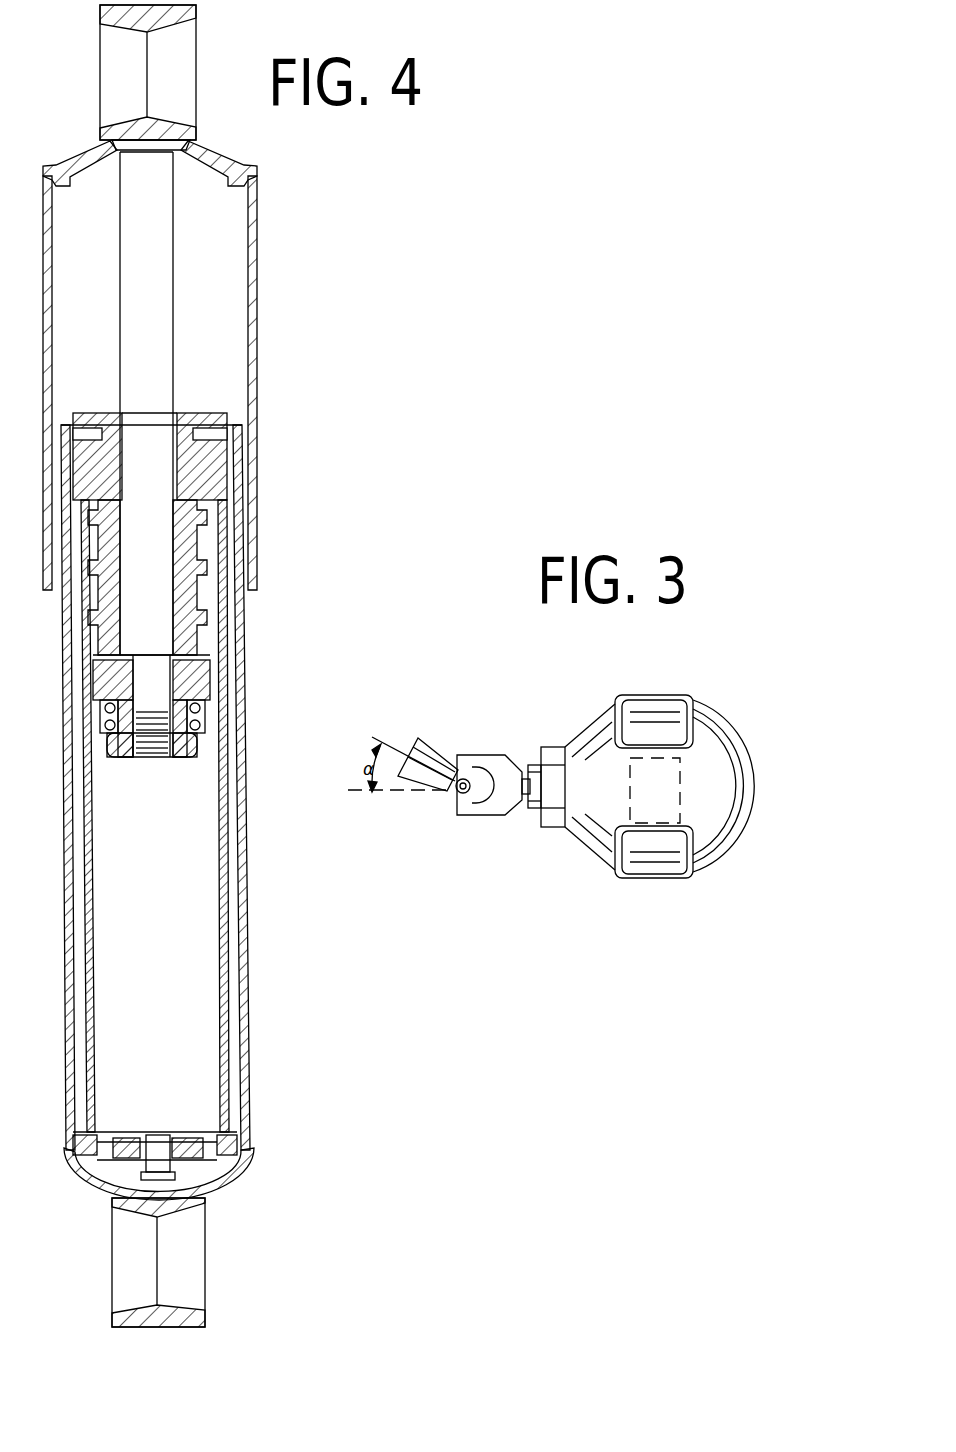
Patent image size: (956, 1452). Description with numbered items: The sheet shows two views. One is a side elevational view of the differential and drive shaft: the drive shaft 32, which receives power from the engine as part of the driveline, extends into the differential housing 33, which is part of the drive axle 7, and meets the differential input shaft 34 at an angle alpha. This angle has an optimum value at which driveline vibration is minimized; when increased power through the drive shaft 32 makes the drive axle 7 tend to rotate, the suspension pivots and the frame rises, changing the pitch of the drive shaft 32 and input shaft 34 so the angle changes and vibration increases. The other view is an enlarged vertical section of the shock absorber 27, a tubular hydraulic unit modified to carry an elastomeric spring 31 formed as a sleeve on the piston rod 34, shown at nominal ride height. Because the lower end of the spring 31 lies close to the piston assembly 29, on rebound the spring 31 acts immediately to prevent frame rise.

In FIG. 3, the drive axle 7 is at (688, 797).
In FIG. 4, the shock absorber 27 is at (248, 1023).
In FIG. 4, the piston assembly 29 is at (227, 688).
In FIG. 4, the elastomeric spring 31 is at (197, 557).
In FIG. 3, the drive shaft 32 is at (428, 742).
In FIG. 3, the differential housing 33 is at (652, 695).
In FIG. 4, the piston rod 34 is at (175, 264).
In FIG. 3, the piston rod 34 is at (524, 797).